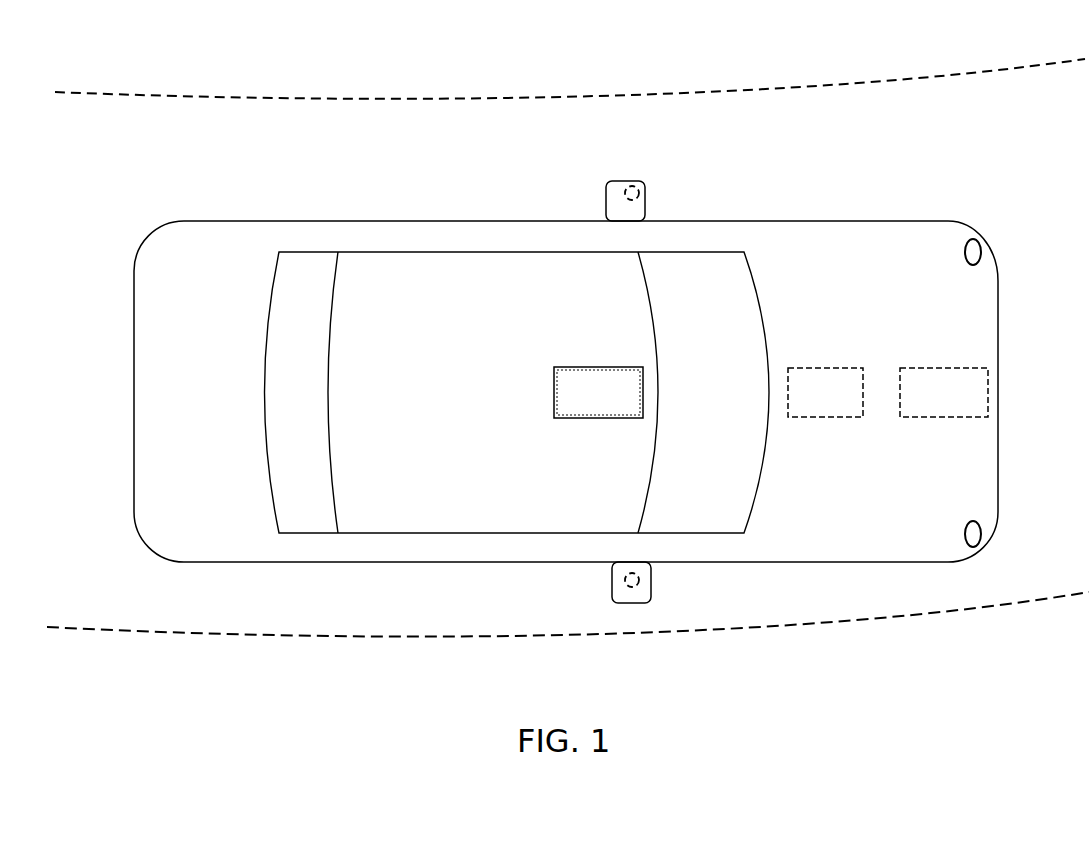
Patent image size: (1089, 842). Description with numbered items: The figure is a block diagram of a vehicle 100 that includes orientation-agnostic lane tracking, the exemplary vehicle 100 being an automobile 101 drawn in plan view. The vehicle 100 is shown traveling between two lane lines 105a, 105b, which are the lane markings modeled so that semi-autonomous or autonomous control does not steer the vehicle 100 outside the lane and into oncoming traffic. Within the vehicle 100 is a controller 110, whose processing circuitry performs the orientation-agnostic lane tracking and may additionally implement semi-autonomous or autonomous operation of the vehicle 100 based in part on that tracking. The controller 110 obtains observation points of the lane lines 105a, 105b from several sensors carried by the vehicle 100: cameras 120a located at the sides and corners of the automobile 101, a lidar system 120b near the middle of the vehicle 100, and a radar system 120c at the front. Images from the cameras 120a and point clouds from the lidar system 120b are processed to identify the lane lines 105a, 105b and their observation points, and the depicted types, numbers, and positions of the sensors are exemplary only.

The vehicle 100 is at (566, 391).
The automobile 101 is at (209, 221).
The lane line 105a is at (475, 101).
The lane line 105b is at (1030, 600).
The controller 110 is at (802, 405).
The cameras 120a is at (664, 191).
The lidar system 120b is at (566, 405).
The radar system 120c is at (913, 405).